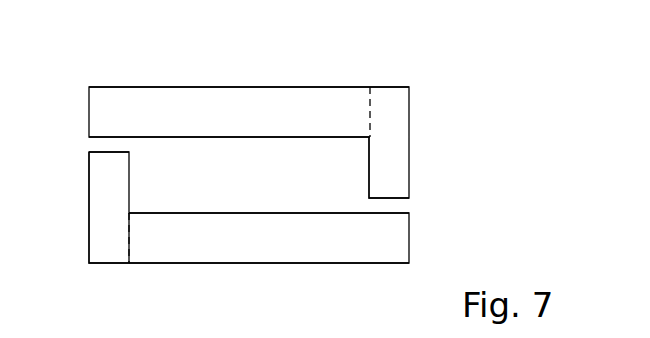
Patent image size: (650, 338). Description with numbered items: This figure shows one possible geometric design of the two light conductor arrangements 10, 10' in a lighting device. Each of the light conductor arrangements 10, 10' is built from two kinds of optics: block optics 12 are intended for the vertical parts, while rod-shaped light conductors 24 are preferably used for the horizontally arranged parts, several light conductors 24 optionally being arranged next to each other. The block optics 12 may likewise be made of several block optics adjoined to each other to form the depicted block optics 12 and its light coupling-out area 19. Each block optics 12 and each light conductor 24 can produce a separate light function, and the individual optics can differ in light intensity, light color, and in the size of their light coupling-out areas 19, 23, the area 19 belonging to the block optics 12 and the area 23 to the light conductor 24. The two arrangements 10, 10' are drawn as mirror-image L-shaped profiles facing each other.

The light conductor arrangement 10 is at (294, 115).
The light conductor arrangement 10' is at (306, 207).
The block optics 12 is at (402, 183).
The light coupling-out area 19 is at (249, 141).
The light coupling-out area 23 is at (249, 175).
The rod-shaped light conductor 24 is at (270, 98).